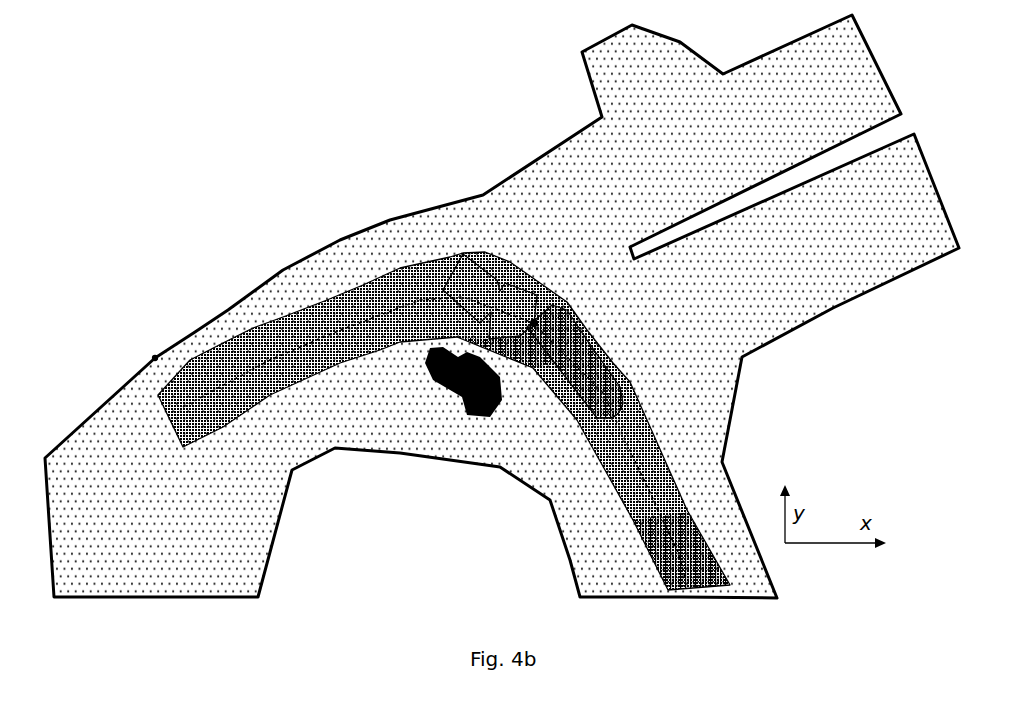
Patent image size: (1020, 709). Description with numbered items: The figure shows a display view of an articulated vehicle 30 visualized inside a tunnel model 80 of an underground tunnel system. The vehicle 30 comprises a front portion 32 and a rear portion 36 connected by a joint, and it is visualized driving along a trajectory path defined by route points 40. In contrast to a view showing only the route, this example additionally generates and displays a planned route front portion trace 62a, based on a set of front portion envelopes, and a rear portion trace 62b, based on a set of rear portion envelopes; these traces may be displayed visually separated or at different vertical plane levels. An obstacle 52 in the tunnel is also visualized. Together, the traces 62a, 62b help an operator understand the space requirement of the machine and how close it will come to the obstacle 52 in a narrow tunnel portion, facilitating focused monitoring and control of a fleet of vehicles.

The tunnel model 80 is at (526, 148).
The front portion trace 62a is at (283, 317).
The rear portion trace 62b is at (352, 292).
The route points 40 is at (420, 300).
The front portion 32 is at (482, 272).
The vehicle 30 is at (551, 285).
The rear portion 36 is at (580, 340).
The obstacle 52 is at (468, 428).